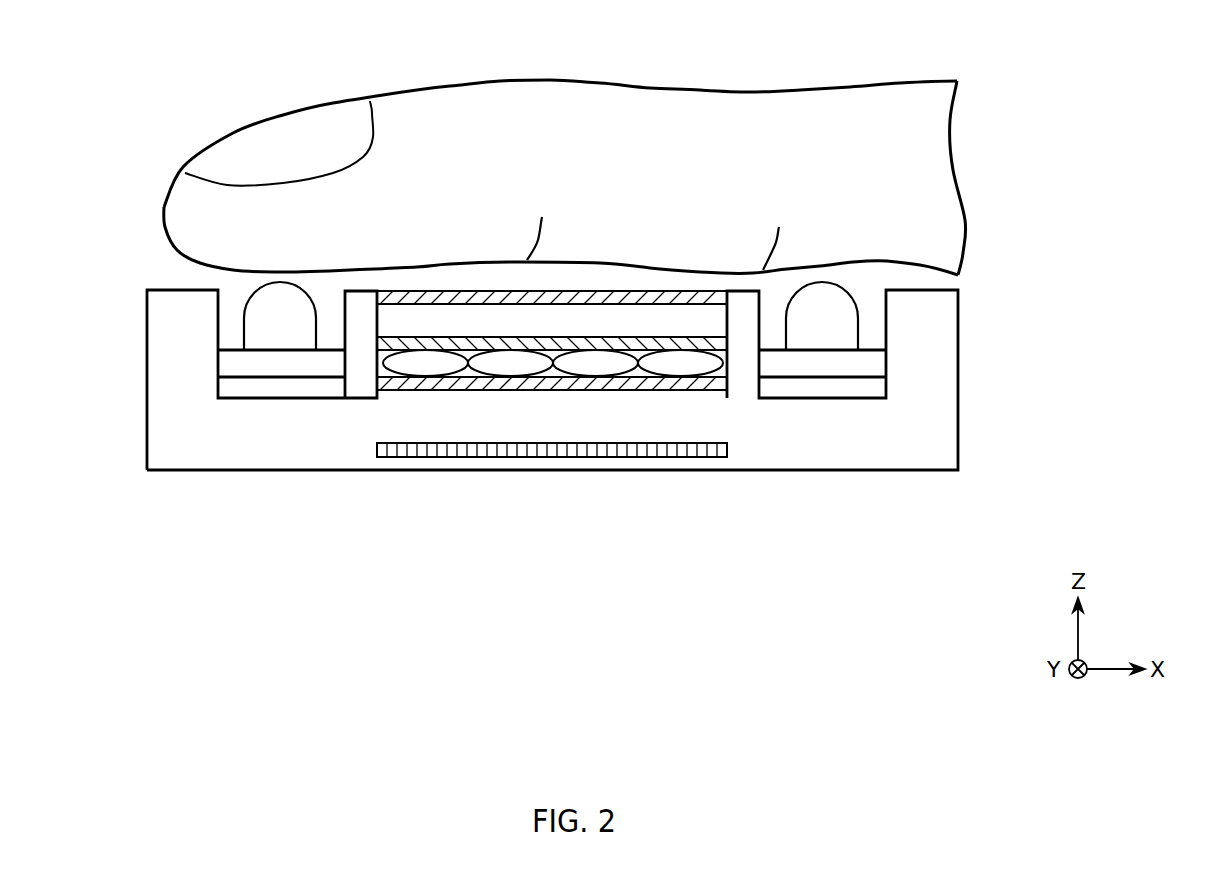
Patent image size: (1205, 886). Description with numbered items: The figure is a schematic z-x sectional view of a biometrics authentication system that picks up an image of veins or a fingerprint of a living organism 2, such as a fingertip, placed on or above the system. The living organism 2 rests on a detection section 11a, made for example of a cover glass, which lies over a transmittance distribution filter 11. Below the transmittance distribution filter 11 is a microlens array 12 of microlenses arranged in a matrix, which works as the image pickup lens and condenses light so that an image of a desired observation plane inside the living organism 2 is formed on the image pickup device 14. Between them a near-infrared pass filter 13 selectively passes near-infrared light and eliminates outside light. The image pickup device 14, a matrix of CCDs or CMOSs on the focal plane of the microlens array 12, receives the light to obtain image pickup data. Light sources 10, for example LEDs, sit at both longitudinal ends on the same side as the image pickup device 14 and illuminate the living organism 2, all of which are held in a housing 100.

The living organism 2 is at (755, 92).
The light sources 10 is at (237, 363).
The transmittance distribution filter 11 is at (727, 320).
The detection section 11a is at (727, 291).
The microlens array 12 is at (727, 366).
The near-infrared pass filter 13 is at (735, 391).
The image pickup device 14 is at (727, 450).
The housing 100 is at (945, 463).